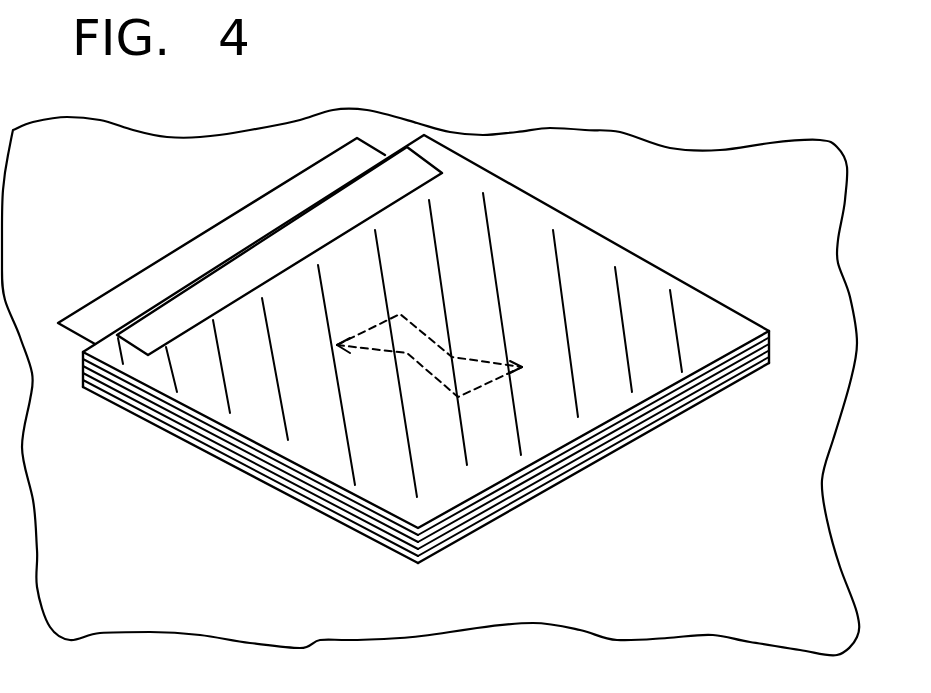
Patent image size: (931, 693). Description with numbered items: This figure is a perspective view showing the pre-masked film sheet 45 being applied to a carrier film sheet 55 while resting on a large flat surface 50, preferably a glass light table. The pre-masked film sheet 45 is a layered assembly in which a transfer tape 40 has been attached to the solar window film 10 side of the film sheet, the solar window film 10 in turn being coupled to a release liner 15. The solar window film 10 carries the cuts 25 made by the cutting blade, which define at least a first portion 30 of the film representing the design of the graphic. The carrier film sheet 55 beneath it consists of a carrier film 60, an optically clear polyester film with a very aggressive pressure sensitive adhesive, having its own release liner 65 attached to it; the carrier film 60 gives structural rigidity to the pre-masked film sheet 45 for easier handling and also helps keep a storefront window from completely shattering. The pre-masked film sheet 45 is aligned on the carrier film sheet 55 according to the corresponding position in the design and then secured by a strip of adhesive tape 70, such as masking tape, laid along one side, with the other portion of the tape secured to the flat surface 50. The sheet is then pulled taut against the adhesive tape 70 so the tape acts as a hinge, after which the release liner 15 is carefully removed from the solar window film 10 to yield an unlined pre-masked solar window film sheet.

The solar window film 10 is at (167, 404).
The release liner 15 is at (110, 381).
The cuts 25 is at (497, 357).
The first portion 30 is at (500, 462).
The transfer tape 40 is at (445, 522).
The pre-masked film sheet 45 is at (83, 373).
The flat surface 50 is at (802, 605).
The carrier film sheet 55 is at (771, 338).
The carrier film 60 is at (700, 391).
The release liner 65 is at (407, 563).
The adhesive tape 70 is at (133, 295).